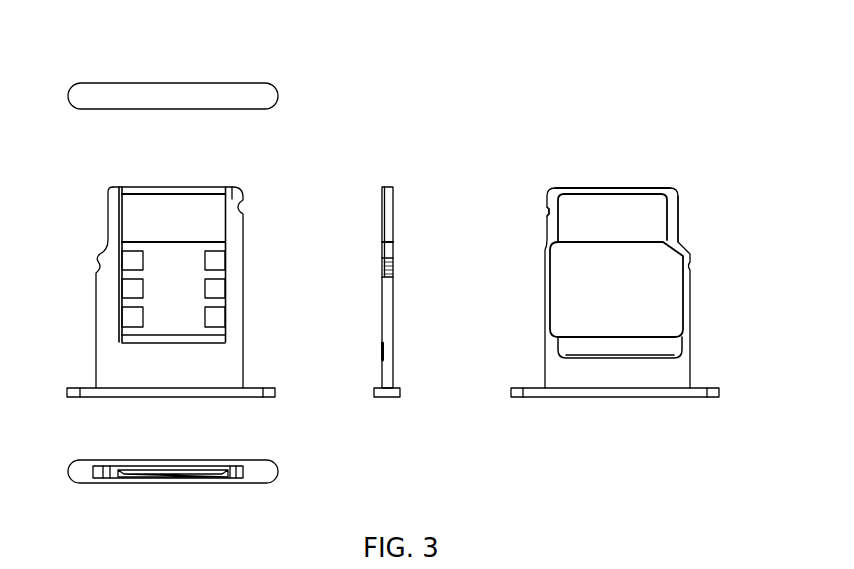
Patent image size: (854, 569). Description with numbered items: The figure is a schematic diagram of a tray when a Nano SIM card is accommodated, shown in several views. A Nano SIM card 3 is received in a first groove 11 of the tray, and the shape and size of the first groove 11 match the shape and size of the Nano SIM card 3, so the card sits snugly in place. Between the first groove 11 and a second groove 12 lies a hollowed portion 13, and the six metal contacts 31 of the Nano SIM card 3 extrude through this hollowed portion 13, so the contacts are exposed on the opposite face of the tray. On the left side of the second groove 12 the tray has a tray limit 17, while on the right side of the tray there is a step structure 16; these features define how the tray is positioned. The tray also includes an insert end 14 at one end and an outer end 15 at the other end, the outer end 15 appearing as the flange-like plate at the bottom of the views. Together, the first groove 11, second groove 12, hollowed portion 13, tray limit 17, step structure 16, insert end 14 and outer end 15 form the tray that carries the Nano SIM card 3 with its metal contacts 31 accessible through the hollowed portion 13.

The Nano SIM card 3 is at (188, 310).
The first groove 11 is at (548, 242).
The second groove 12 is at (600, 197).
The hollowed portion 13 is at (175, 290).
The insert end 14 is at (583, 187).
The outer end 15 is at (618, 397).
The step structure 16 is at (680, 218).
The tray limit 17 is at (548, 210).
The metal contacts 31 is at (213, 260).